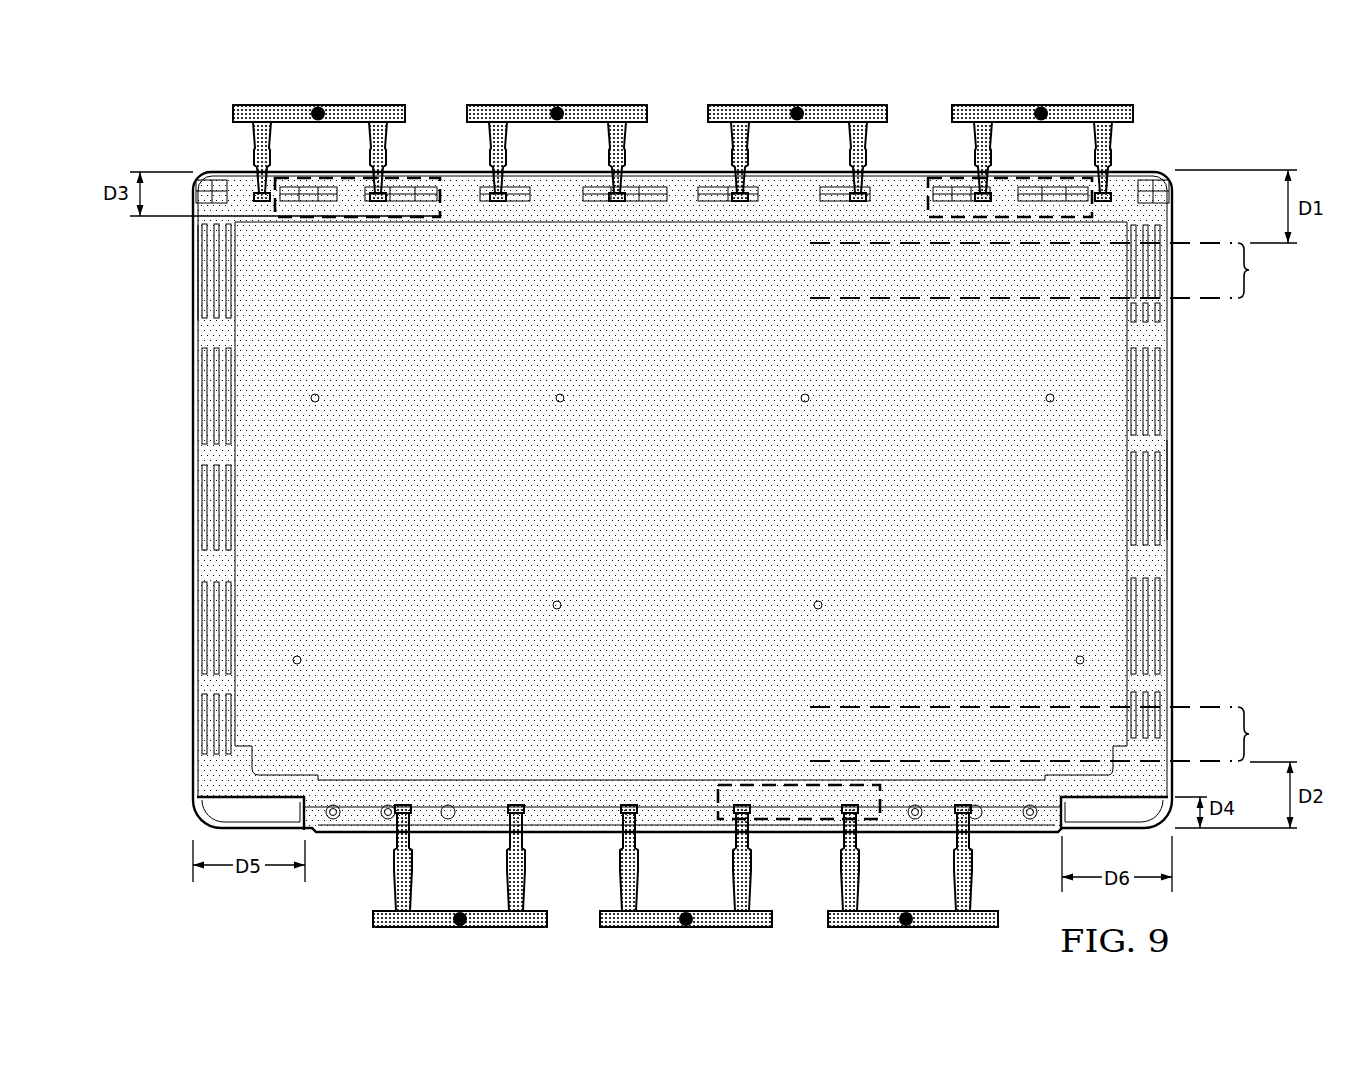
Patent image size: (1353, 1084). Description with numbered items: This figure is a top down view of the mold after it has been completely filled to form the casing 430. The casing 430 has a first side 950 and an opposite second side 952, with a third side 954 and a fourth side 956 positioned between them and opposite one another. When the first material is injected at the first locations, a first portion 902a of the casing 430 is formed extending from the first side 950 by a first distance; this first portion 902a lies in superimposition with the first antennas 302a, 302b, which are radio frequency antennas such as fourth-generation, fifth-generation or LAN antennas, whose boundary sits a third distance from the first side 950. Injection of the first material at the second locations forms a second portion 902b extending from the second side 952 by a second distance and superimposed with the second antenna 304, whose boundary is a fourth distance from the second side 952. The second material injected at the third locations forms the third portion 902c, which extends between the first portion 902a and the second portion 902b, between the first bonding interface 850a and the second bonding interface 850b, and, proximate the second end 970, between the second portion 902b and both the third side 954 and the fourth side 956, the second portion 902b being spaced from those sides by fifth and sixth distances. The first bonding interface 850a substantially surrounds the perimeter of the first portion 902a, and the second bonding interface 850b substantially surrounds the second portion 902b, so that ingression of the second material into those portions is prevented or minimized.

The casing 430 is at (1168, 142).
The first side 950 is at (216, 172).
The second side 952 is at (578, 833).
The third side 954 is at (193, 412).
The fourth side 956 is at (1175, 612).
The first portion 902a is at (178, 247).
The second portion 902b is at (365, 845).
The third portion 902c is at (1190, 490).
The first antenna 302a is at (408, 178).
The first antenna 302b is at (958, 178).
The second antenna 304 is at (797, 820).
The first bonding interface 850a is at (1060, 270).
The second bonding interface 850b is at (1060, 734).
The second end 970 is at (1190, 853).